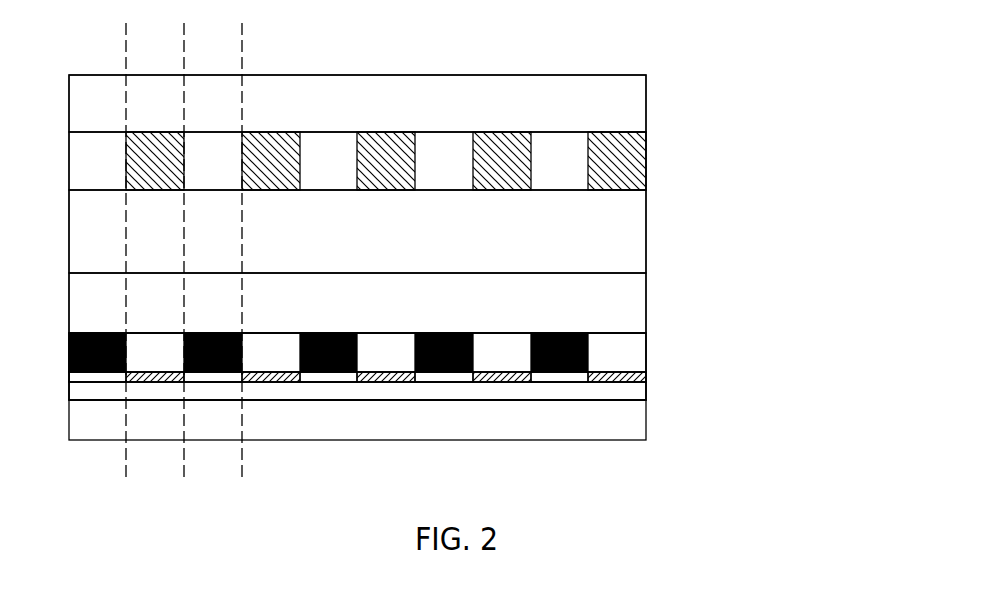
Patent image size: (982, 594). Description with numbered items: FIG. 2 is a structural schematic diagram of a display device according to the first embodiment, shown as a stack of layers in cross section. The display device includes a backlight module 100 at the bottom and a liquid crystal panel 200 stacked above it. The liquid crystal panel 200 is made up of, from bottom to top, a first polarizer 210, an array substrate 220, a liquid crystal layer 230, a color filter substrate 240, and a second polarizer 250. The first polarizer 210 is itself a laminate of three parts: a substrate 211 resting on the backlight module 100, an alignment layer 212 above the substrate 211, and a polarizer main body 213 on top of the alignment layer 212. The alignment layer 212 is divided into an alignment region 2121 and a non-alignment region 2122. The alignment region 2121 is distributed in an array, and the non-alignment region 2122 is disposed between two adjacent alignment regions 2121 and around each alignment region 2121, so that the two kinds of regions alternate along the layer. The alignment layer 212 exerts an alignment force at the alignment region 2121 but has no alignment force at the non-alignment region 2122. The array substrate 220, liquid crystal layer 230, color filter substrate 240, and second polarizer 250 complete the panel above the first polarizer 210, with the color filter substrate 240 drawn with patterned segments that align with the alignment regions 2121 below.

The backlight module 100 is at (627, 432).
The liquid crystal panel 200 is at (790, 84).
The first polarizer 210 is at (727, 352).
The substrate 211 is at (612, 394).
The alignment layer 212 is at (396, 424).
The alignment region 2121 is at (270, 378).
The non-alignment region 2122 is at (450, 378).
The polarizer main body 213 is at (643, 350).
The array substrate 220 is at (630, 309).
The liquid crystal layer 230 is at (623, 232).
The color filter substrate 240 is at (632, 166).
The second polarizer 250 is at (632, 111).